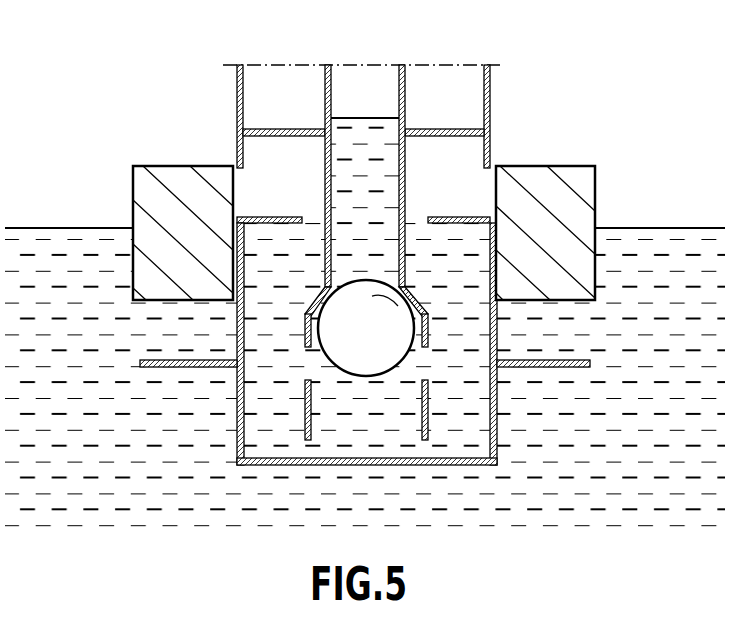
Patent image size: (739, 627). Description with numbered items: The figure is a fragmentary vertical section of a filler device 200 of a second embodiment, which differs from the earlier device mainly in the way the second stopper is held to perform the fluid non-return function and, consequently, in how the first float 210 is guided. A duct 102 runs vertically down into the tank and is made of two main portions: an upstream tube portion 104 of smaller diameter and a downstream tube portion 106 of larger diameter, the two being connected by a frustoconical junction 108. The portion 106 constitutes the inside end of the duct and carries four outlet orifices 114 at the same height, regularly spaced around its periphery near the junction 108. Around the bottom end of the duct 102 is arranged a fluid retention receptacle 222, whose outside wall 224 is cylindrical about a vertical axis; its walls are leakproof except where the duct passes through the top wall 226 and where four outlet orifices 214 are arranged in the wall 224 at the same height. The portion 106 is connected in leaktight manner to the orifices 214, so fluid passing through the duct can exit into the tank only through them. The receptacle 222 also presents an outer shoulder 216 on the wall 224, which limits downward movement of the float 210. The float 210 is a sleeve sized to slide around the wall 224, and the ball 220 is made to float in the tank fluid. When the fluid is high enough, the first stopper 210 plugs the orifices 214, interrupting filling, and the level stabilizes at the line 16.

The line 16 is at (53, 228).
The filler device 200 is at (365, 293).
The duct 102 is at (408, 89).
The upstream tube portion 104 is at (405, 164).
The downstream tube portion 106 is at (430, 427).
The frustoconical junction 108 is at (418, 290).
The outlet orifices 114 is at (440, 357).
The first float 210 is at (595, 185).
The outlet orifices 214 is at (240, 187).
The outer shoulder 216 is at (155, 367).
The ball 220 is at (383, 341).
The fluid retention receptacle 222 is at (283, 469).
The outside wall 224 is at (237, 97).
The top wall 226 is at (275, 128).